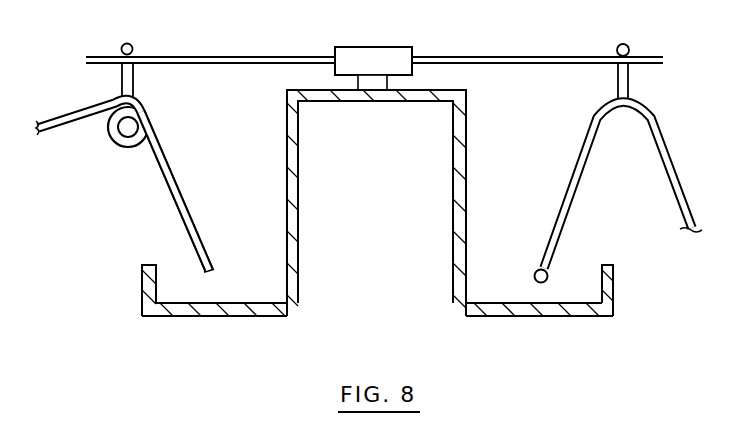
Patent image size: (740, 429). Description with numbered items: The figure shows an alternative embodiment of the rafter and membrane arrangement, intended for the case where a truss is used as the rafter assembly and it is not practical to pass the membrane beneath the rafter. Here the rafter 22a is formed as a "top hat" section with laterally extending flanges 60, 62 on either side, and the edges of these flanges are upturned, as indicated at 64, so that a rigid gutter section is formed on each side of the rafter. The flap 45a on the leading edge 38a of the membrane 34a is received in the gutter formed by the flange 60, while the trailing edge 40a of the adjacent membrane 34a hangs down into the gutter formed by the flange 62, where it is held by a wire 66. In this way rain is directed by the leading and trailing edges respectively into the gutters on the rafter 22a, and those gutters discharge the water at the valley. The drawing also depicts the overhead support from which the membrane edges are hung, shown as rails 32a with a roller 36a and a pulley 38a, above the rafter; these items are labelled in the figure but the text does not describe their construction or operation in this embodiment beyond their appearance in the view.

The rafter 22a is at (303, 183).
The rails 32a is at (521, 57).
The membrane 34a is at (44, 138).
The hanger roller 36a is at (630, 47).
The leading edge 38a is at (163, 122).
The trailing edge 40a is at (571, 198).
The flap 45a is at (190, 210).
The flange 60 is at (203, 317).
The flange 62 is at (532, 312).
The upturned edge 64 is at (142, 281).
The wire 66 is at (537, 270).